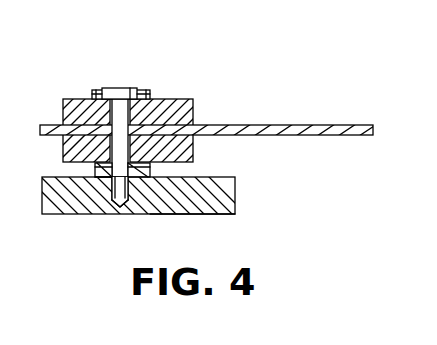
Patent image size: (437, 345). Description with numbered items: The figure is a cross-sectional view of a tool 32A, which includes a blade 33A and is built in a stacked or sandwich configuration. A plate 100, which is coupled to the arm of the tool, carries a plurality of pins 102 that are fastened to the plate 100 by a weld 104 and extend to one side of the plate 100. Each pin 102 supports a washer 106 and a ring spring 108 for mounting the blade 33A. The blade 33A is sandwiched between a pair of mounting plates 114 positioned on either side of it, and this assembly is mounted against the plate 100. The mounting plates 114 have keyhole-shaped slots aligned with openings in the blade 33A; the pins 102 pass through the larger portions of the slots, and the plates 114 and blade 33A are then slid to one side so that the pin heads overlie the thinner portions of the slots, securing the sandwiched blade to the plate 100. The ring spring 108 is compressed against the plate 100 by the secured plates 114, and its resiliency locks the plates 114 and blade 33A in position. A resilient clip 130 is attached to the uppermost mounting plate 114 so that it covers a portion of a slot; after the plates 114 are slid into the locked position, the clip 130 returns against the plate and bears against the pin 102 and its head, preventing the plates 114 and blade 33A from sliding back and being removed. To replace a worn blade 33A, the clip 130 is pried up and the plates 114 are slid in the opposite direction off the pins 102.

The tool 32A is at (262, 90).
The blade 33A is at (355, 125).
The plate 100 is at (88, 216).
The pin 102 is at (127, 89).
The weld 104 is at (119, 215).
The washer 106 is at (95, 170).
The ring spring 108 is at (183, 215).
The mounting plate 114 is at (76, 98).
The clip 130 is at (96, 90).